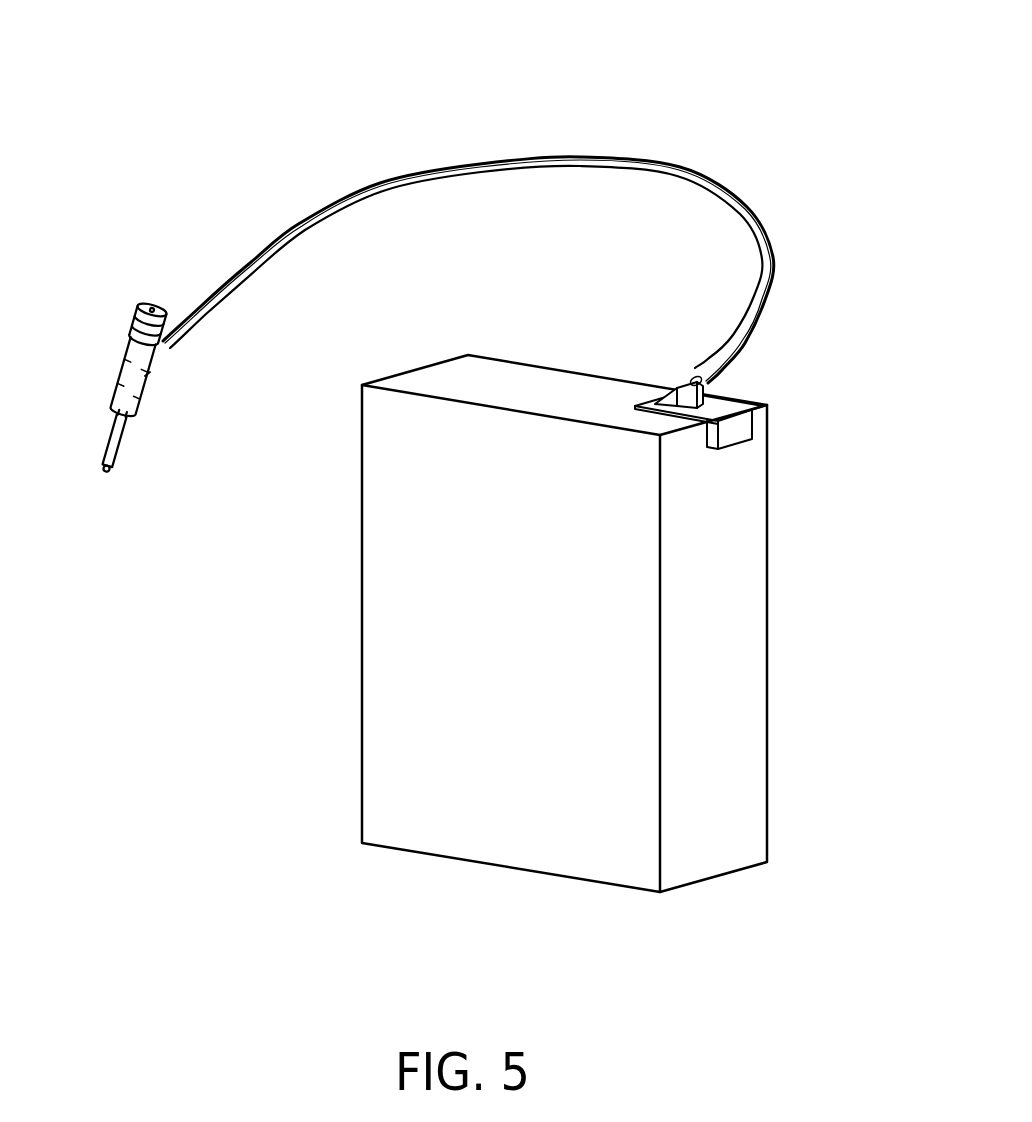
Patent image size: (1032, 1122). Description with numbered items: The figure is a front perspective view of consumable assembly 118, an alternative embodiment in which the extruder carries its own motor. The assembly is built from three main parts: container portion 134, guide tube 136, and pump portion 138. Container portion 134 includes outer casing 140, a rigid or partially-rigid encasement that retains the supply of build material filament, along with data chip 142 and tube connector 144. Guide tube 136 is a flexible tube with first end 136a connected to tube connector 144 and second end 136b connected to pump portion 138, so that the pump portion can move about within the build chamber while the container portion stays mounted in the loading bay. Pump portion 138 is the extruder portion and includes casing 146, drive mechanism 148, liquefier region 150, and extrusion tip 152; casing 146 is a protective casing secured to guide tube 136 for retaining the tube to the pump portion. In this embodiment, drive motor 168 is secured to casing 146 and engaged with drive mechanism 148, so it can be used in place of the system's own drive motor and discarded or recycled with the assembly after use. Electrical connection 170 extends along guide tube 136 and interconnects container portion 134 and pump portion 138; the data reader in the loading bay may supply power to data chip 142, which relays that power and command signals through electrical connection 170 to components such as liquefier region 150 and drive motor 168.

The consumable assembly 118 is at (790, 34).
The container portion 134 is at (496, 643).
The guide tube 136 is at (524, 253).
The first end 136a is at (712, 338).
The second end 136b is at (200, 349).
The pump portion 138 is at (152, 372).
The outer casing 140 is at (493, 838).
The data chip 142 is at (740, 427).
The tube connector 144 is at (672, 393).
The casing 146 is at (142, 376).
The drive mechanism 148 is at (133, 344).
The liquefier region 150 is at (103, 447).
The extrusion tip 152 is at (110, 468).
The drive motor 168 is at (152, 308).
The electrical connection 170 is at (360, 200).